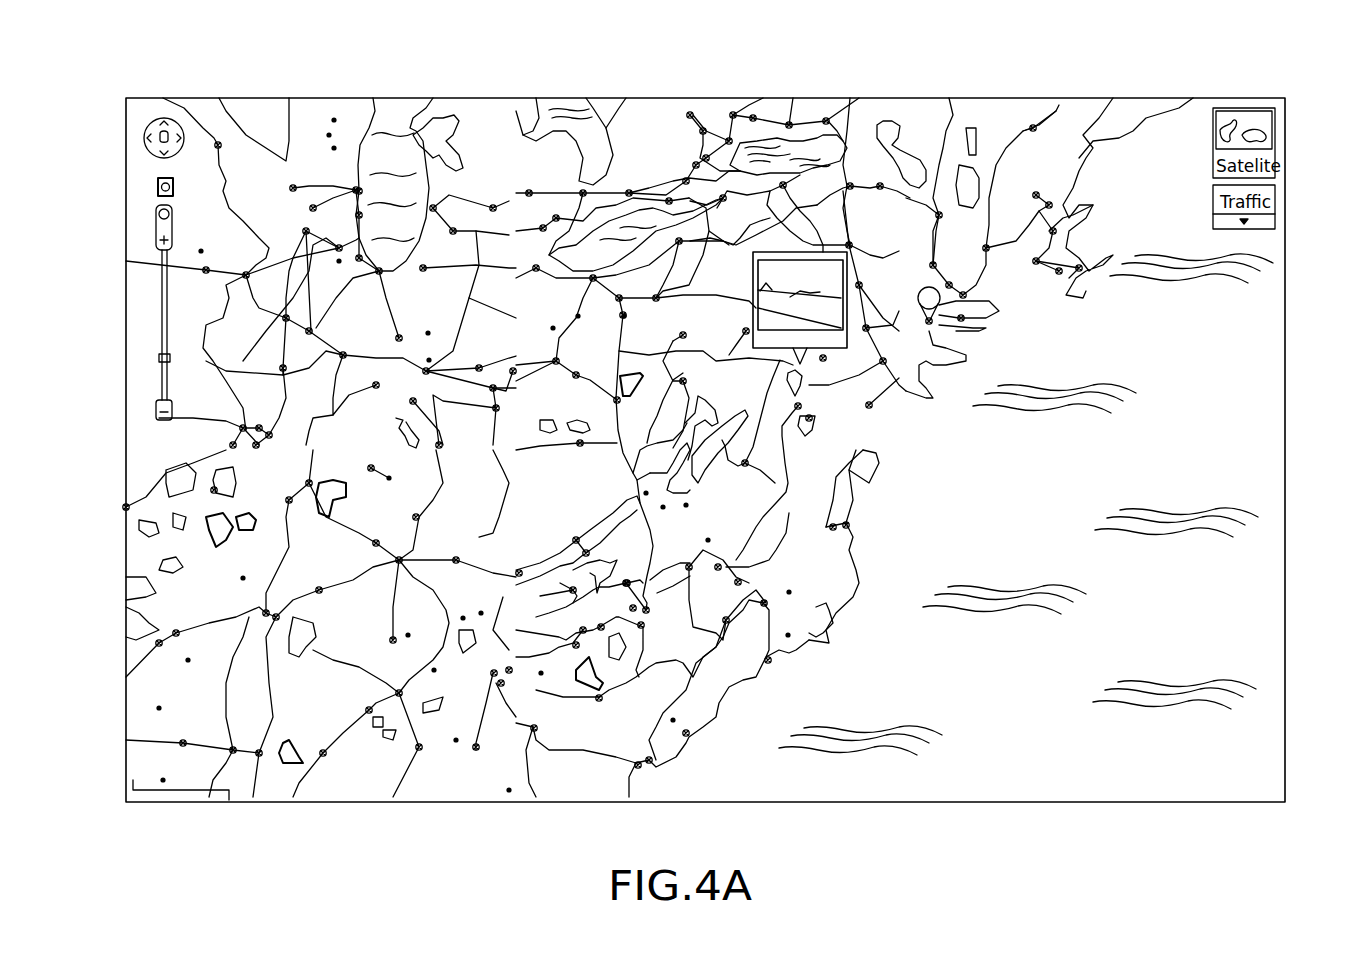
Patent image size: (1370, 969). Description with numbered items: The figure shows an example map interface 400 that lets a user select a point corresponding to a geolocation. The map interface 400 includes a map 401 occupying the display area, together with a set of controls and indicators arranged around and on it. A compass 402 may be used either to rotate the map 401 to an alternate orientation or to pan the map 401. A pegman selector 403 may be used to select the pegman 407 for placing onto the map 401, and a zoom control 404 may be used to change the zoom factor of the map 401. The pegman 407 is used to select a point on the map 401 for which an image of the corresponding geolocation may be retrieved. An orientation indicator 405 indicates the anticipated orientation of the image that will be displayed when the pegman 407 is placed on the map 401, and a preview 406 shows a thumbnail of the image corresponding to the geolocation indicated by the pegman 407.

The map interface 400 is at (1325, 60).
The map 401 is at (698, 419).
The compass 402 is at (151, 106).
The pegman selector 403 is at (124, 214).
The zoom control 404 is at (123, 328).
The orientation indicator 405 is at (804, 611).
The preview 406 is at (799, 209).
The pegman 407 is at (1087, 385).